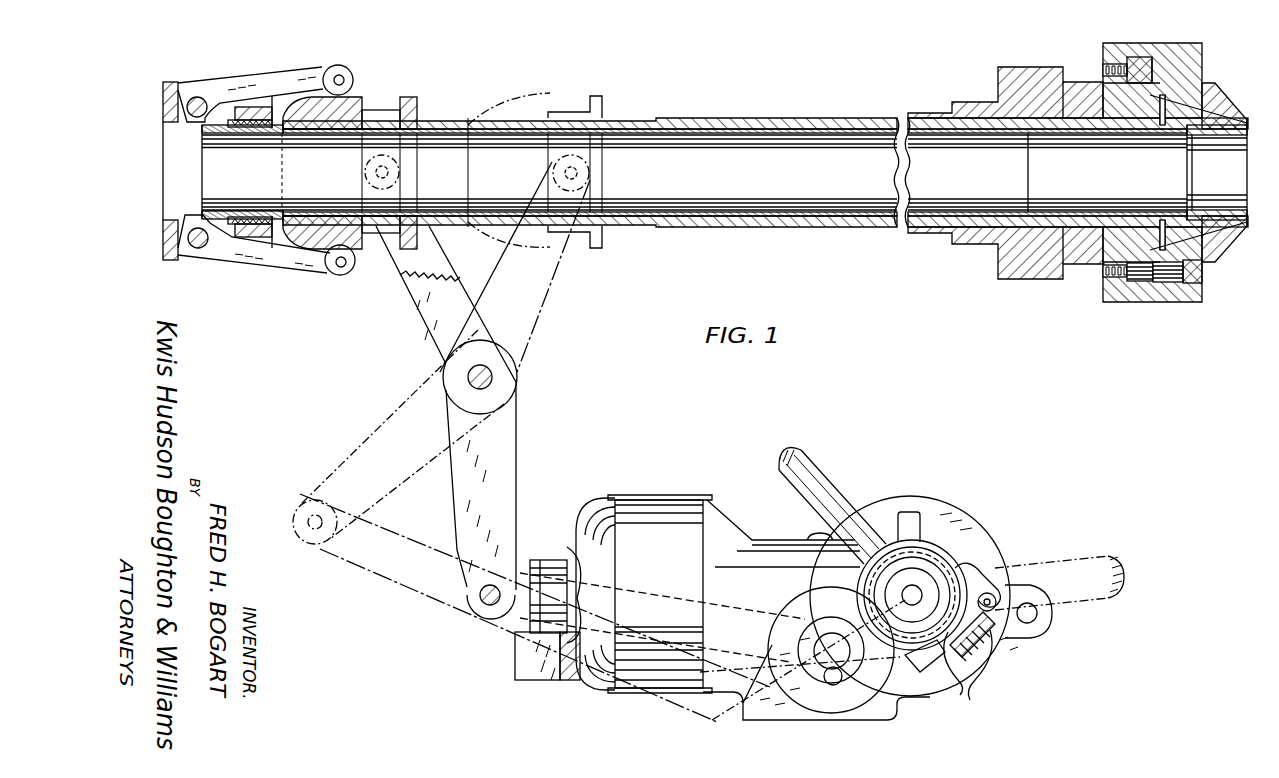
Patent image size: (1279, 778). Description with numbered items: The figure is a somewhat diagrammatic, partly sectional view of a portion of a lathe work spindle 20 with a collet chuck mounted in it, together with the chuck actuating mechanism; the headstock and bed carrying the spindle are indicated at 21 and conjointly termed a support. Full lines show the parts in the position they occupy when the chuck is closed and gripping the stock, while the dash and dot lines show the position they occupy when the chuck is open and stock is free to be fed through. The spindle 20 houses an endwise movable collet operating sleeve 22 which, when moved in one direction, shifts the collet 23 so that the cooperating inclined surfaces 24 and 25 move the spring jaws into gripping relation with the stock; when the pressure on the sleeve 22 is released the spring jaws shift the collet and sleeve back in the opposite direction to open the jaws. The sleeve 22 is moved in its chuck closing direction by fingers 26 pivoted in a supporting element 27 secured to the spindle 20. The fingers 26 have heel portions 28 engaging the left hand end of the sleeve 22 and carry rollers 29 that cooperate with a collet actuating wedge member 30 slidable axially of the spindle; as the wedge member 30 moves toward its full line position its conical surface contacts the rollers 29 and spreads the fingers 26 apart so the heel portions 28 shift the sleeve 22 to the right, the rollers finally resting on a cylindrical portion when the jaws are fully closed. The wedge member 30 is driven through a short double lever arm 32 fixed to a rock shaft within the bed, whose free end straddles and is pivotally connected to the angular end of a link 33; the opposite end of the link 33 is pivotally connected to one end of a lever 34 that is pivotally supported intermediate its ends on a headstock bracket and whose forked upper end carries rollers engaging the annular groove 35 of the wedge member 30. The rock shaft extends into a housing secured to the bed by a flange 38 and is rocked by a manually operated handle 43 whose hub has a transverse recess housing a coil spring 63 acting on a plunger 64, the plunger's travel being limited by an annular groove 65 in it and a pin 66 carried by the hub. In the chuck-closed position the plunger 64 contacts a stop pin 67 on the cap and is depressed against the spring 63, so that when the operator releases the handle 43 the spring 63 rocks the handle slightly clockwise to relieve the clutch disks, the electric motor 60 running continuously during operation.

The work spindle 20 is at (778, 119).
The headstock and bed 21 is at (1013, 272).
The collet operating sleeve 22 is at (744, 128).
The collet 23 is at (1095, 220).
The inclined surface 24 is at (1215, 117).
The inclined surface 25 is at (1235, 120).
The fingers 26 is at (255, 92).
The supporting element 27 is at (163, 120).
The heel portions 28 is at (192, 218).
The rollers 29 is at (350, 92).
The collet actuating wedge member 30 is at (528, 96).
The short double lever arm 32 is at (1052, 633).
The link 33 is at (528, 570).
The lever 34 is at (510, 465).
The annular groove 35 is at (397, 95).
The flange 38 is at (903, 500).
The manually operated handle 43 is at (808, 468).
The electric motor 60 is at (652, 512).
The coil spring 63 is at (952, 694).
The plunger 64 is at (955, 574).
The annular groove 65 is at (980, 665).
The pin 66 is at (975, 680).
The stop pin 67 is at (985, 595).